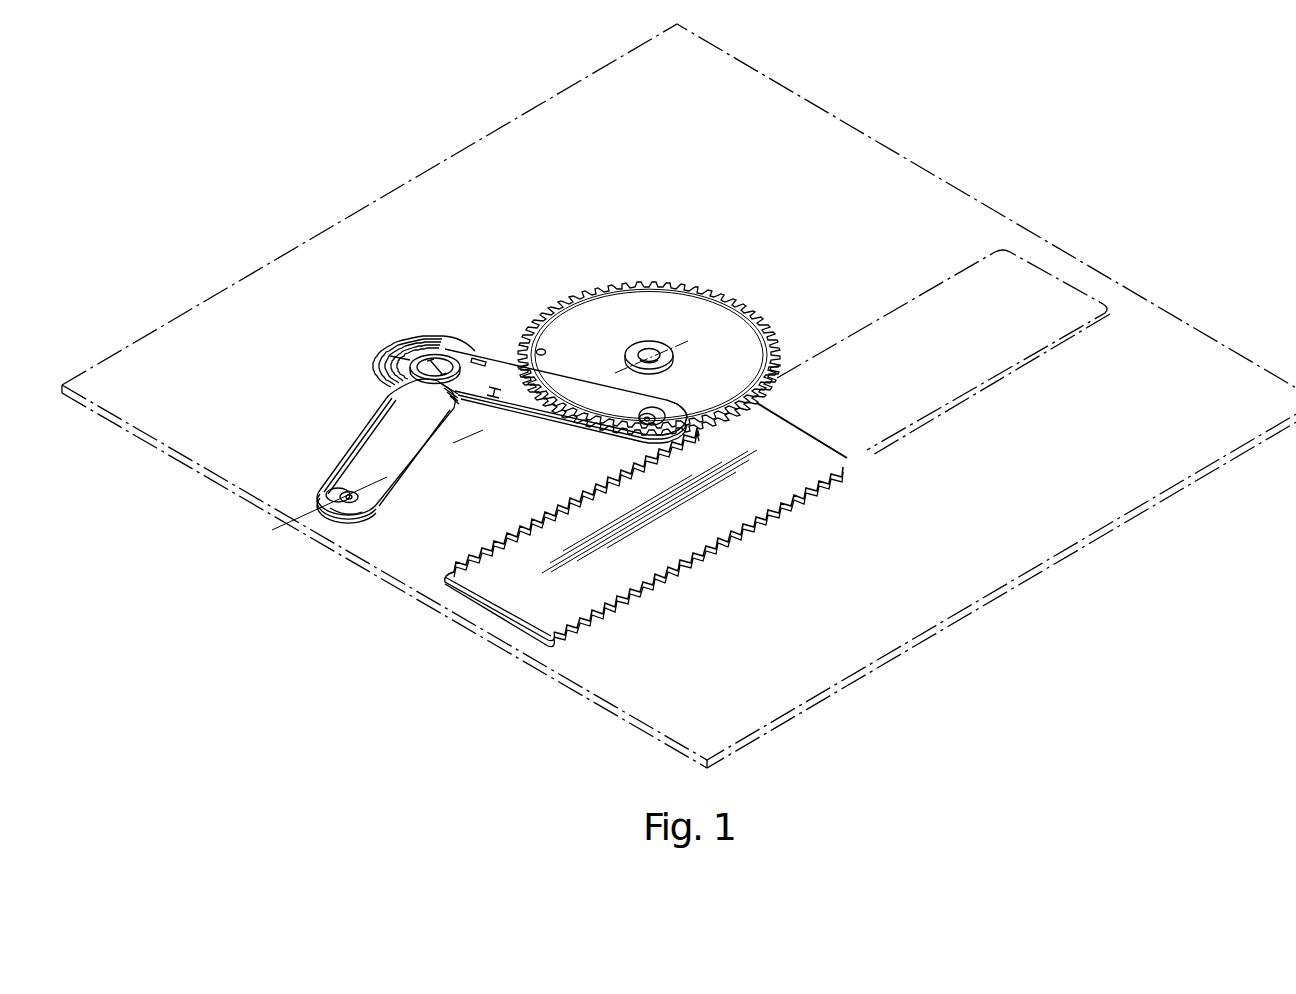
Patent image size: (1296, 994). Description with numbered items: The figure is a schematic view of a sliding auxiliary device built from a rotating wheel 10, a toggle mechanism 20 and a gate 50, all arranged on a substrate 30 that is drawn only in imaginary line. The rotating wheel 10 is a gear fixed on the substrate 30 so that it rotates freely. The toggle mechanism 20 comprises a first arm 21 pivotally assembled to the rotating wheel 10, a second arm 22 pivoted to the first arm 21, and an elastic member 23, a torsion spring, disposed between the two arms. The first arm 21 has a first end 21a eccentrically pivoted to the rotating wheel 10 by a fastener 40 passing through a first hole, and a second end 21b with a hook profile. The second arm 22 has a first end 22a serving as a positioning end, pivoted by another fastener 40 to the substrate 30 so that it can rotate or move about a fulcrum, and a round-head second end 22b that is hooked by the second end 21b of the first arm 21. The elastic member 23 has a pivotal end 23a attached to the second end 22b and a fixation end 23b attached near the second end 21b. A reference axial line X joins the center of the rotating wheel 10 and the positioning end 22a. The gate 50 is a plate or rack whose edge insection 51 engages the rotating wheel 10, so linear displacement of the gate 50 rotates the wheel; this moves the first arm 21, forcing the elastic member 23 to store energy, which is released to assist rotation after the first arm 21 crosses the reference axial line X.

The rotating wheel 10 is at (635, 313).
The toggle mechanism 20 is at (320, 350).
The first arm 21 is at (564, 365).
The first end of the first arm 21a is at (628, 418).
The second end of the first arm 21b is at (478, 365).
The second arm 22 is at (352, 404).
The first end of the second arm 22a is at (347, 480).
The second end of the second arm 22b is at (398, 350).
The elastic member 23 is at (444, 320).
The pivotal end 23a is at (430, 356).
The fixation end 23b is at (504, 386).
The substrate 30 is at (138, 455).
The fastener 40 is at (672, 403).
The gate 50 is at (708, 525).
The insection 51 is at (523, 525).
The reference axial line X is at (660, 349).